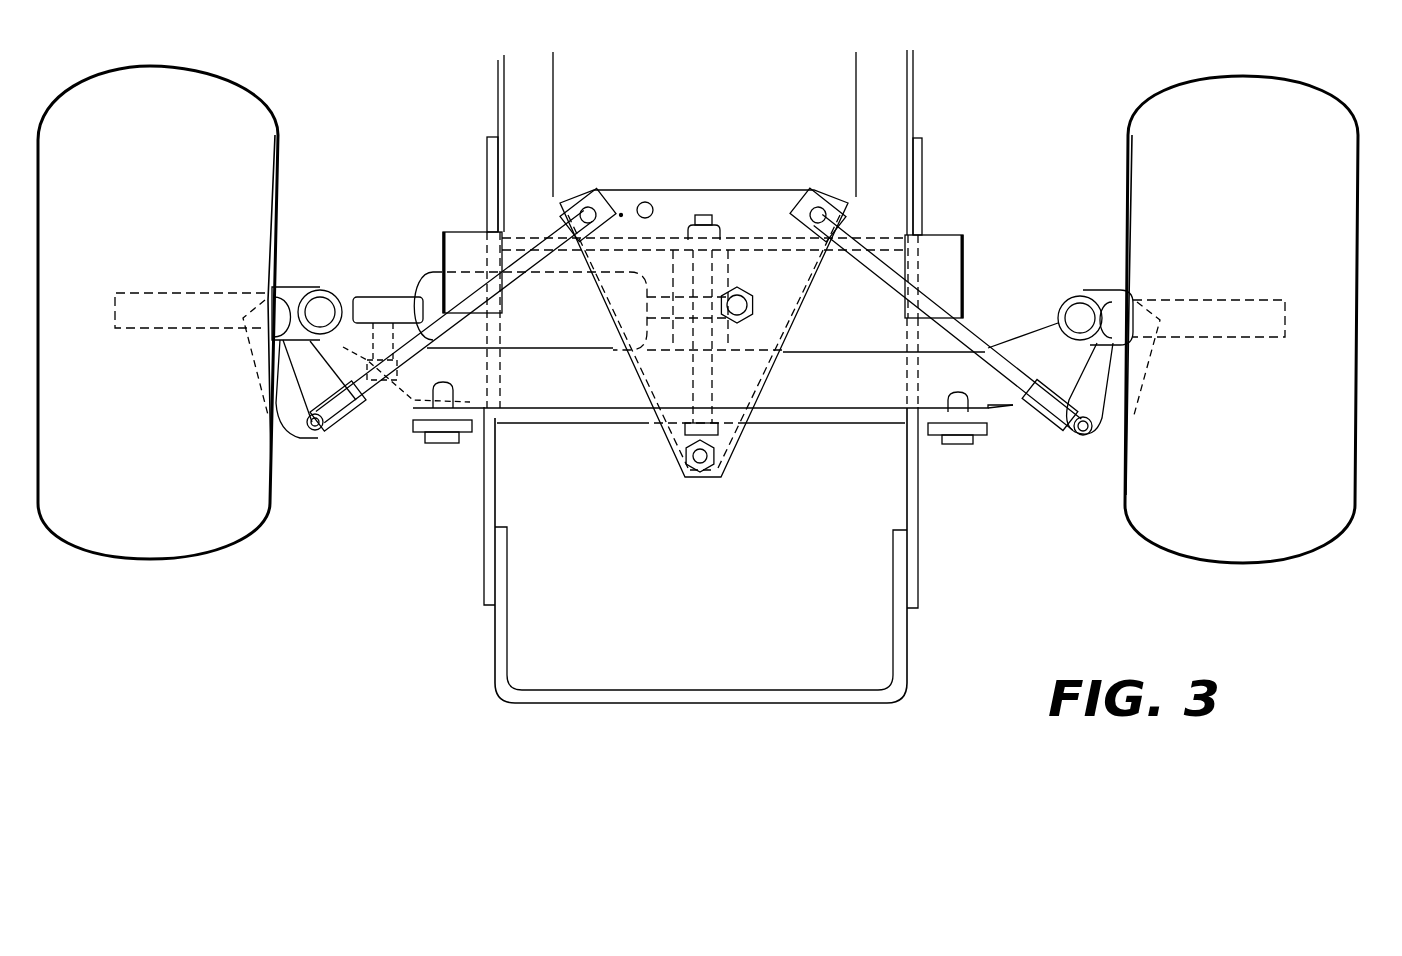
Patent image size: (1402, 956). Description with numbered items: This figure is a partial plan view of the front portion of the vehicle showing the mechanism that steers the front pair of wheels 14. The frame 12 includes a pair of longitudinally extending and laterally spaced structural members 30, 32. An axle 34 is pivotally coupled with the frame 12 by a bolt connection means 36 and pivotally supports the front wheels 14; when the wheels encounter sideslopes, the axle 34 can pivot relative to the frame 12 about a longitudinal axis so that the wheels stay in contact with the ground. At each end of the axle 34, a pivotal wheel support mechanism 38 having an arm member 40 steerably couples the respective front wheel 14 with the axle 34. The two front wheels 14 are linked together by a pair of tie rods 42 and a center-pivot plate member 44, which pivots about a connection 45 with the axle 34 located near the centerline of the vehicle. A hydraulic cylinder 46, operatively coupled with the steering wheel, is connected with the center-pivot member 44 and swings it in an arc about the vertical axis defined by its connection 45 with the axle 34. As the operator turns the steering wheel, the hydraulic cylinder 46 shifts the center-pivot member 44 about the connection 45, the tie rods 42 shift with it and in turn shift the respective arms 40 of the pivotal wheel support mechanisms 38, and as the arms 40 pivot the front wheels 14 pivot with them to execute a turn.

The frame 12 is at (484, 589).
The front wheels 14 is at (246, 533).
The structural member 30 is at (484, 494).
The structural member 32 is at (918, 505).
The axle 34 is at (1012, 405).
The bolt connection means 36 is at (750, 437).
The pivotal wheel support mechanism 38 is at (337, 283).
The arm member 40 is at (293, 440).
The tie rod 42 is at (517, 277).
The center-pivot plate member 44 is at (777, 190).
The connection 45 is at (676, 458).
The hydraulic cylinder 46 is at (613, 346).